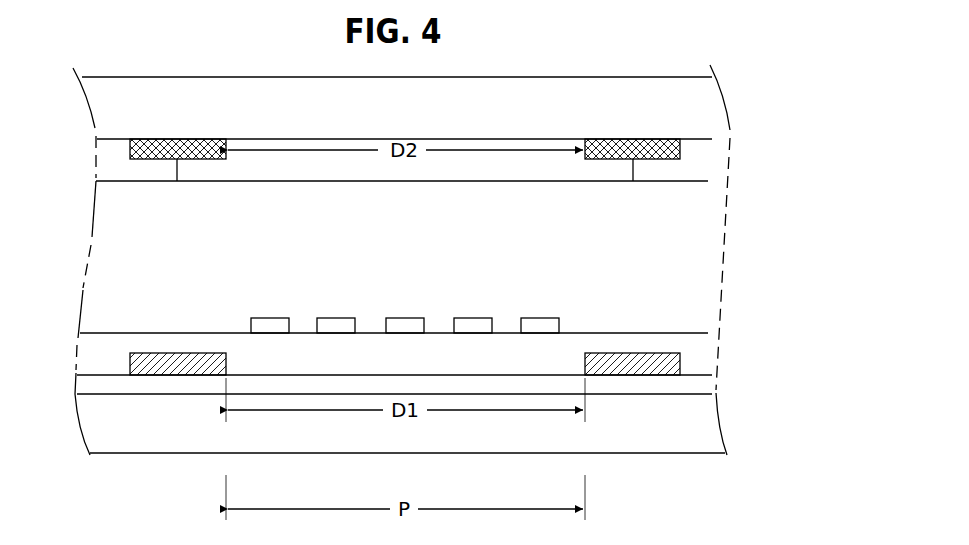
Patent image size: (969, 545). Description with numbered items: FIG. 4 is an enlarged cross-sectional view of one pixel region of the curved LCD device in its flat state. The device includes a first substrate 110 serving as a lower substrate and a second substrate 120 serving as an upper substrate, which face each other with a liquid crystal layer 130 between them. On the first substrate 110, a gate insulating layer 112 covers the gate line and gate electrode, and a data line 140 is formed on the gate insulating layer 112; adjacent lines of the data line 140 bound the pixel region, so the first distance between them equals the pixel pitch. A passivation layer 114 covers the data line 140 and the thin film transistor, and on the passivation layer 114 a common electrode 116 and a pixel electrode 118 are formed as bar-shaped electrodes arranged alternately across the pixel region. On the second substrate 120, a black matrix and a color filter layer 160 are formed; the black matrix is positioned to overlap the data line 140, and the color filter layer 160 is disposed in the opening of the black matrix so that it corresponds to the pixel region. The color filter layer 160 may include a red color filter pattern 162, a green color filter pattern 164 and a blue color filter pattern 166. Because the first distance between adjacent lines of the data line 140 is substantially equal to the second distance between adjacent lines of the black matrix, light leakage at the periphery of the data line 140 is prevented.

The first substrate 110 is at (660, 438).
The gate insulating layer 112 is at (498, 380).
The passivation layer 114 is at (303, 368).
The common electrode 116 is at (271, 328).
The pixel electrode 118 is at (338, 328).
The second substrate 120 is at (660, 128).
The liquid crystal layer 130 is at (660, 265).
The data line 140 is at (177, 375).
The color filter layer 160 is at (502, 225).
The red color filter pattern 162 is at (149, 175).
The green color filter pattern 164 is at (407, 167).
The blue color filter pattern 166 is at (658, 176).